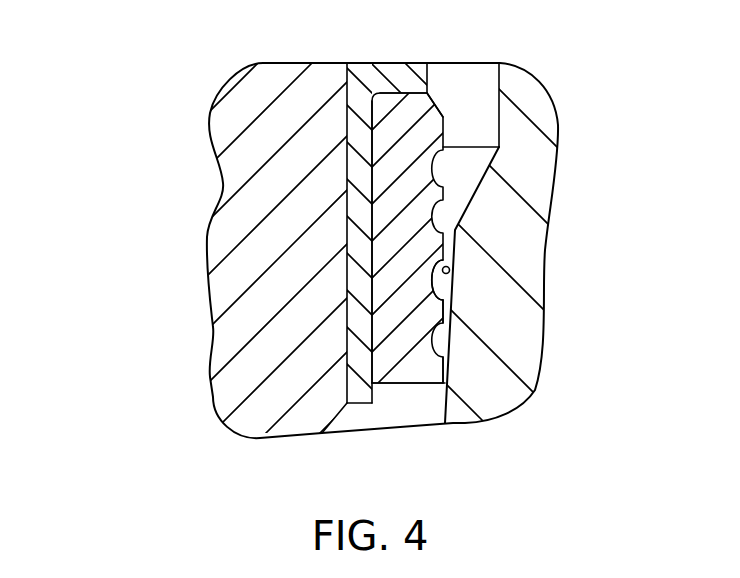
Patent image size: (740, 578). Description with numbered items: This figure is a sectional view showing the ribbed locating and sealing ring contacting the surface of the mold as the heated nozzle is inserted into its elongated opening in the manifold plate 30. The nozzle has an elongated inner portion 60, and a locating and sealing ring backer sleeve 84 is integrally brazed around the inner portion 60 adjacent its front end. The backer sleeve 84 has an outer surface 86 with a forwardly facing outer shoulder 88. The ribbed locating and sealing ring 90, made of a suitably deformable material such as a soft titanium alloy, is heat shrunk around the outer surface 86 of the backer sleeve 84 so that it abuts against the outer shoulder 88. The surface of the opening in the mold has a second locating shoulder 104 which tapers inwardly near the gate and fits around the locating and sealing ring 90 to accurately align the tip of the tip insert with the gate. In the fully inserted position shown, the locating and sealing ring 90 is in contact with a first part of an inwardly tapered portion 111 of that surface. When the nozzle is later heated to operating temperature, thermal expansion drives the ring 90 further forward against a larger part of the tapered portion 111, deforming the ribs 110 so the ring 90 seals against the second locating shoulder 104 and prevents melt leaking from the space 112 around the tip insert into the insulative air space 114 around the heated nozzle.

The manifold plate 30 is at (533, 196).
The elongated inner portion 60 is at (218, 287).
The locating and sealing ring backer sleeve 84 is at (400, 73).
The outer surface 86 is at (452, 278).
The forwardly facing outer shoulder 88 is at (423, 112).
The ribbed locating and sealing ring 90 is at (403, 157).
The second locating shoulder 104 is at (453, 238).
The ribs 110 is at (457, 314).
The inwardly tapered portion 111 is at (455, 257).
The space 112 is at (403, 406).
The insulative air space 114 is at (466, 78).